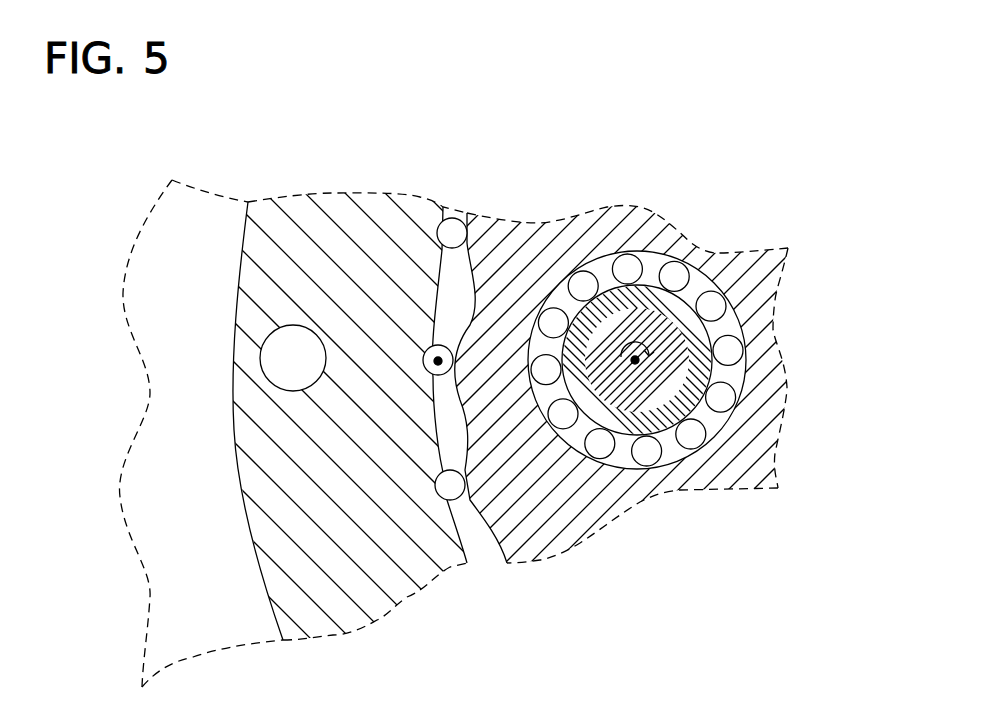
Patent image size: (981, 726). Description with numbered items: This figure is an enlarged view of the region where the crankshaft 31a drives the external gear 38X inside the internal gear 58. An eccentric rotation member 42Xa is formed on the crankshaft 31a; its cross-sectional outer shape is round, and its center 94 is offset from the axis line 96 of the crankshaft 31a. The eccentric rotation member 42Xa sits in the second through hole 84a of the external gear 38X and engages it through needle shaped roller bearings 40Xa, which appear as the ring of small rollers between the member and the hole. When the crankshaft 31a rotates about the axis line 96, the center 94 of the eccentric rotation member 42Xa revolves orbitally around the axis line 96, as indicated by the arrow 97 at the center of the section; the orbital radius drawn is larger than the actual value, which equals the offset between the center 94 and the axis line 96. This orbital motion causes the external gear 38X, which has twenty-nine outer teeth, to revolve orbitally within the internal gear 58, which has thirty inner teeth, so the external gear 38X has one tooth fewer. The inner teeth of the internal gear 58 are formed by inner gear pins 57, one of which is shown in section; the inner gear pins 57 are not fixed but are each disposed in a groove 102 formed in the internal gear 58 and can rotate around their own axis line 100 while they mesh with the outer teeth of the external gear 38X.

The internal gear 58 is at (243, 235).
The inner gear pins 57 is at (410, 293).
The axis line 100 is at (423, 358).
The groove 102 is at (438, 361).
The external gear 38X is at (605, 495).
The center 94 is at (697, 424).
The axis line 96 is at (607, 320).
The arrow 97 is at (663, 308).
The crankshaft 31a is at (637, 356).
The needle shaped roller bearings 40Xa is at (553, 322).
The eccentric rotation member 42Xa is at (573, 437).
The second through hole 84a is at (695, 450).